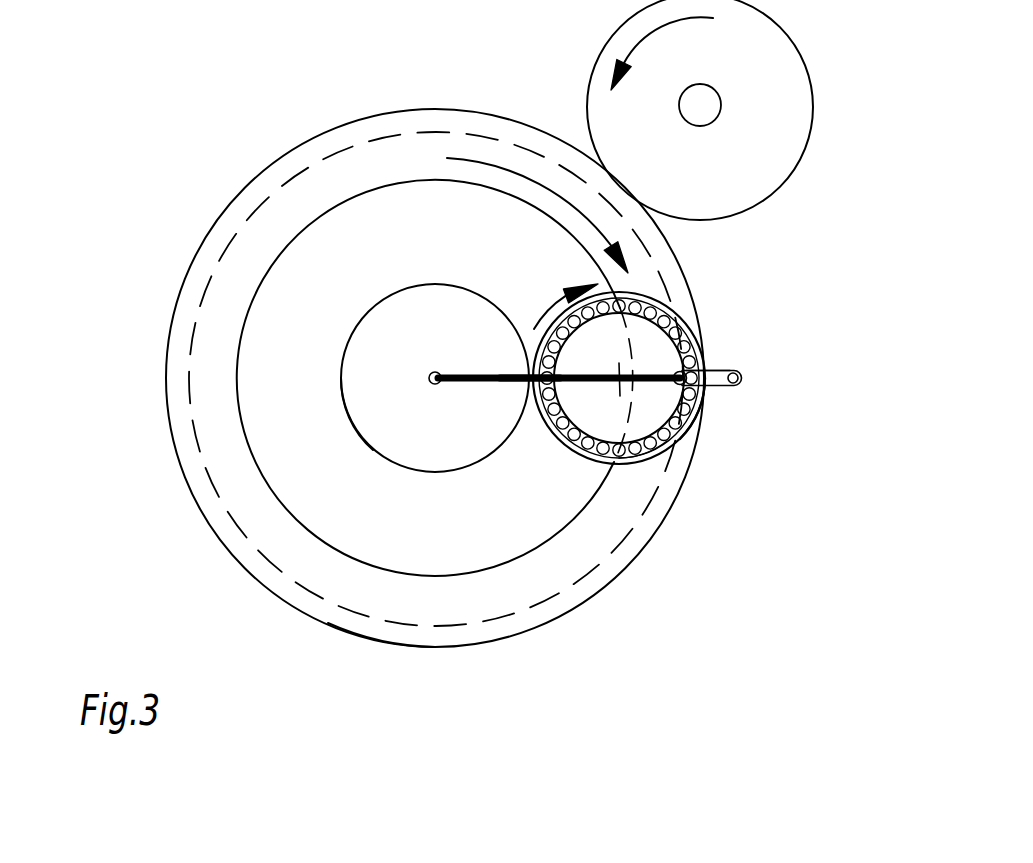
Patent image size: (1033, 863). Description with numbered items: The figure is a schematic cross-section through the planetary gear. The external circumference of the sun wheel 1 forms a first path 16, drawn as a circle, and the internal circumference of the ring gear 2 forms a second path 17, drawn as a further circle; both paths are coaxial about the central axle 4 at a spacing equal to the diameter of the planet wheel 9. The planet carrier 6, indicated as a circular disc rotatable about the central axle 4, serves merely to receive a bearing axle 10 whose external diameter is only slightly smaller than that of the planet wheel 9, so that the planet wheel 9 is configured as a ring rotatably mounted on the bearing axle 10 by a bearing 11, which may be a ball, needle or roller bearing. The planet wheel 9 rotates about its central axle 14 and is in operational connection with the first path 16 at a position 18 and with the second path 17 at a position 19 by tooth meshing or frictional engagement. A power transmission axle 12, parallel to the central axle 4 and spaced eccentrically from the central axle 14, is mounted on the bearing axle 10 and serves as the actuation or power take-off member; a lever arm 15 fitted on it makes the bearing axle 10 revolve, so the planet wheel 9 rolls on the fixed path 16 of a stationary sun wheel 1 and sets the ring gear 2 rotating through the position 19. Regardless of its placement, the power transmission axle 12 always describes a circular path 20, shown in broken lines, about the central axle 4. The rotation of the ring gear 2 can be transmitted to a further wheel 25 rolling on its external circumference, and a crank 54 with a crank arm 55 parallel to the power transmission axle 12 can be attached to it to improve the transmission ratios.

The sun wheel 1 is at (334, 447).
The ring gear 2 is at (148, 460).
The central axle 4 is at (430, 377).
The planet carrier 6 is at (442, 607).
The planet wheel 9 is at (647, 296).
The bearing axle 10 is at (582, 405).
The bearing 11 is at (641, 462).
The power transmission axle 12 is at (684, 466).
The central axle of the planet wheel 14 is at (545, 316).
The lever arm 15 is at (483, 373).
The first path 16 is at (373, 450).
The second path 17 is at (328, 623).
The position 18 is at (528, 373).
The position 19 is at (703, 368).
The circular path 20 is at (600, 562).
The further wheel 25 is at (733, 78).
The crank 54 is at (712, 383).
The crank arm 55 is at (743, 380).